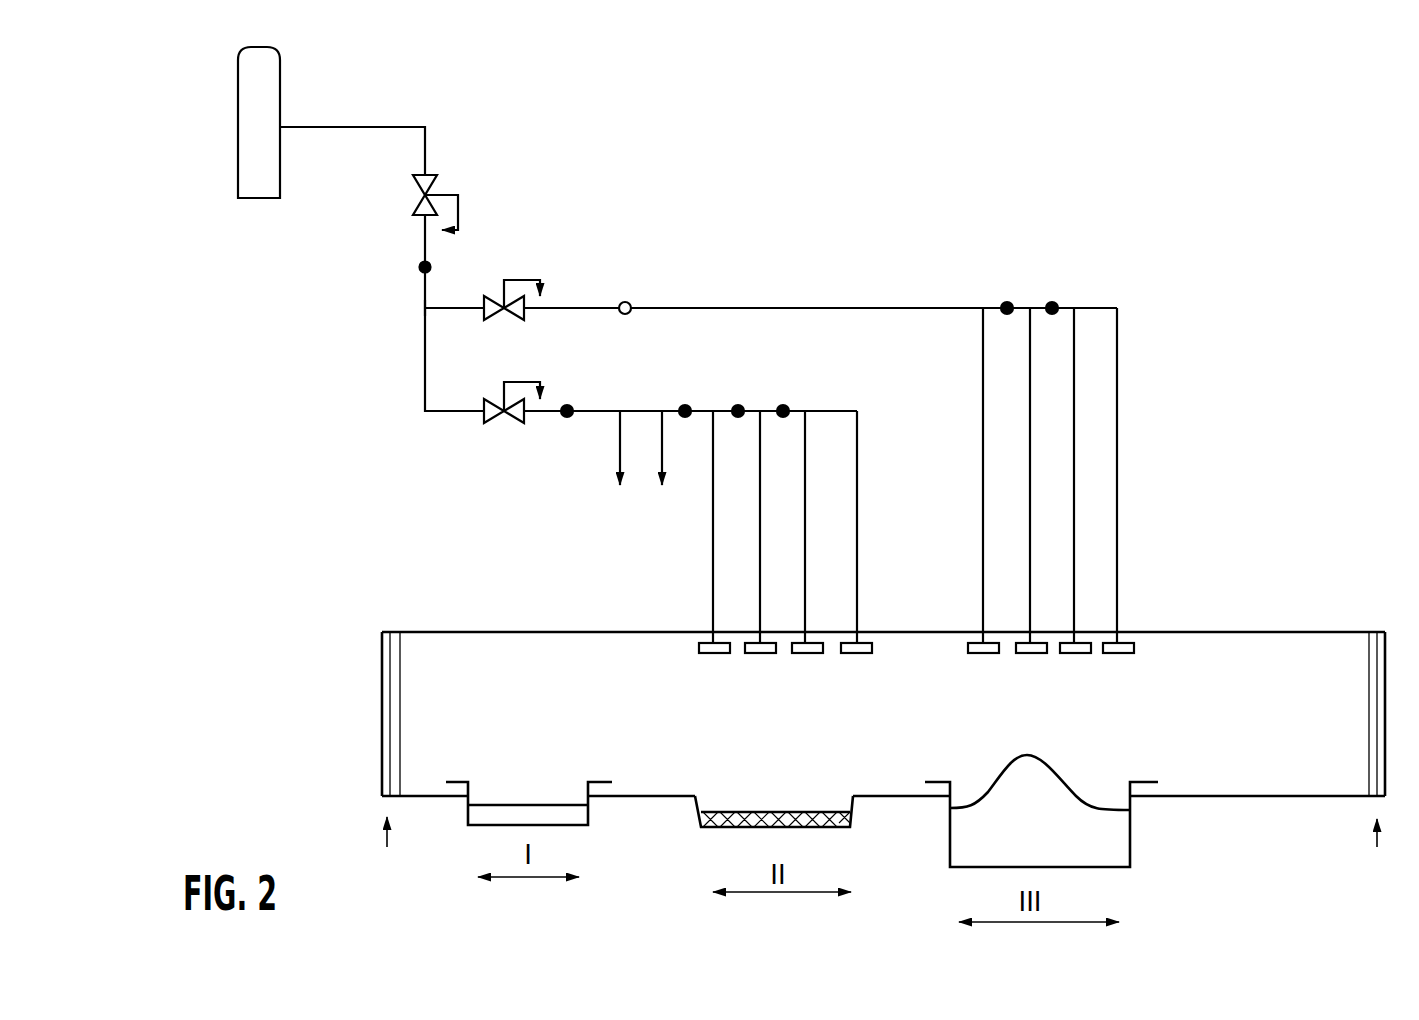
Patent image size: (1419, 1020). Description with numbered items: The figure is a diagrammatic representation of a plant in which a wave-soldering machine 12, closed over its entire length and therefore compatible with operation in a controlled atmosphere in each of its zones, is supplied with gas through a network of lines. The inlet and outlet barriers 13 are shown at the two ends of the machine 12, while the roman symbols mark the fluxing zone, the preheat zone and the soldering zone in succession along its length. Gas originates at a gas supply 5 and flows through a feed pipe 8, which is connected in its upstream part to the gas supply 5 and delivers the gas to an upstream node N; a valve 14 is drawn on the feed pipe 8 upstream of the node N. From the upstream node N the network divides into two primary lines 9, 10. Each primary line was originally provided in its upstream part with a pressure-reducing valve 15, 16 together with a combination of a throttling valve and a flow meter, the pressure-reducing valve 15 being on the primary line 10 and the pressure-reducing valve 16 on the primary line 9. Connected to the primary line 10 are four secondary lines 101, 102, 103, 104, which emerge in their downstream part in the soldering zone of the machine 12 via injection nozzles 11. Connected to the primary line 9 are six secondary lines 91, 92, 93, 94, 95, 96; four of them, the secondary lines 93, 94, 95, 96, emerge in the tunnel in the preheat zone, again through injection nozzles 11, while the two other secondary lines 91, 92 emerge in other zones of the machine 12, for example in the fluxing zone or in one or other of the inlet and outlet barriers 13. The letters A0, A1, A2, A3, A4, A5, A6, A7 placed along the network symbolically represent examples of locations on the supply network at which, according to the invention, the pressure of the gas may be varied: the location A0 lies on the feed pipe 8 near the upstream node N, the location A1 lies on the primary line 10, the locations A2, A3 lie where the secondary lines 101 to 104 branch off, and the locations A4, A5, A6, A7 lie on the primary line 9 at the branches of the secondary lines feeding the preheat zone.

The gas supply 5 is at (238, 108).
The feed pipe 8 is at (427, 146).
The flow control valve 14 is at (448, 190).
The upstream node N is at (416, 304).
The location at which gas pressure may be varied A0 is at (440, 260).
The primary line 10 is at (457, 300).
The pressure-reducing valve 15 is at (546, 268).
The pressure-reducing valve 16 is at (505, 424).
The primary line 9 is at (414, 350).
The location at which gas pressure may be varied A1 is at (632, 294).
The location at which gas pressure may be varied A2 is at (1012, 295).
The location at which gas pressure may be varied A3 is at (1058, 295).
The location at which gas pressure may be varied A4 is at (573, 398).
The location at which gas pressure may be varied A5 is at (689, 398).
The location at which gas pressure may be varied A6 is at (744, 398).
The location at which gas pressure may be varied A7 is at (791, 398).
The secondary line 91 is at (620, 455).
The secondary line 92 is at (662, 470).
The secondary line 93 is at (713, 504).
The secondary line 94 is at (760, 514).
The secondary line 95 is at (805, 510).
The secondary line 96 is at (857, 512).
The secondary line 101 is at (983, 362).
The secondary line 102 is at (1030, 410).
The secondary line 103 is at (1074, 427).
The secondary line 104 is at (1117, 440).
The injection nozzle 11 is at (707, 654).
The wave-soldering machine 12 is at (1252, 712).
The inlet and outlet barriers 13 is at (882, 851).